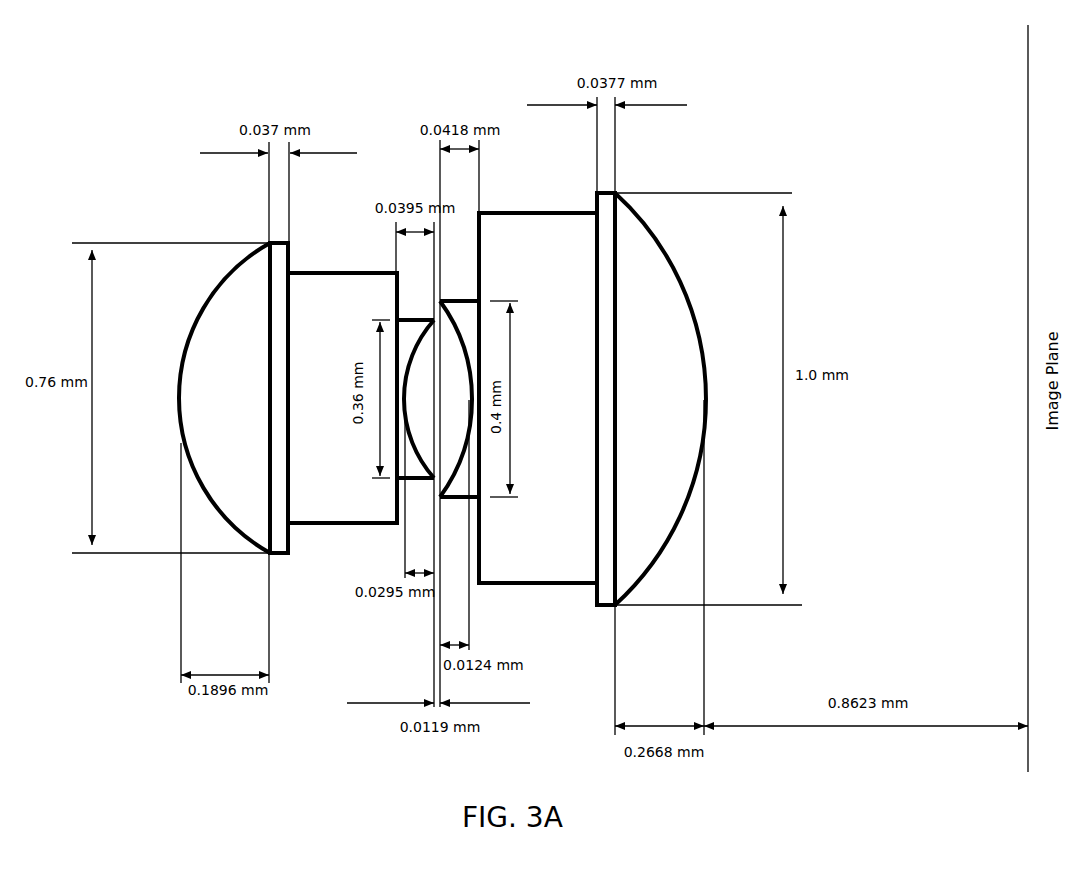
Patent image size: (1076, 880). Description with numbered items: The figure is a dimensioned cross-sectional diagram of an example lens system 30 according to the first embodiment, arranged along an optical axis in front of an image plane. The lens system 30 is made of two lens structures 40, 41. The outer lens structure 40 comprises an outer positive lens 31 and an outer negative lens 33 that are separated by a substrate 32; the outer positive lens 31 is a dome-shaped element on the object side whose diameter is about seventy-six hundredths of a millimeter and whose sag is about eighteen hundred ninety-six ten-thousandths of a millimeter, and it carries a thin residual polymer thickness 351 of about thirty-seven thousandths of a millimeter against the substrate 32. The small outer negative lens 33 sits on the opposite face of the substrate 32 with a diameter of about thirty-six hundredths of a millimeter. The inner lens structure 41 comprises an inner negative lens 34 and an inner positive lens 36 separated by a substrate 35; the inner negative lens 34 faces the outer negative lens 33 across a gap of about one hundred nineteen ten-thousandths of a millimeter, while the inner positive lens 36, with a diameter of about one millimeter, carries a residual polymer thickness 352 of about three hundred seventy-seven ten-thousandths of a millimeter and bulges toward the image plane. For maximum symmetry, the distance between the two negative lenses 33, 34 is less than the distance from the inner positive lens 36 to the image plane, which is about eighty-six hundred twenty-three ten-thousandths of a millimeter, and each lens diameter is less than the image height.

The lens system 30 is at (143, 83).
The outer lens structure 40 is at (187, 217).
The inner lens structure 41 is at (712, 153).
The outer positive lens 31 is at (233, 398).
The substrate 32 is at (342, 398).
The outer negative lens 33 is at (406, 326).
The inner negative lens 34 is at (468, 312).
The substrate 35 is at (538, 398).
The inner positive lens 36 is at (651, 399).
The residual polymer thickness 351 is at (284, 556).
The residual polymer thickness 352 is at (597, 607).